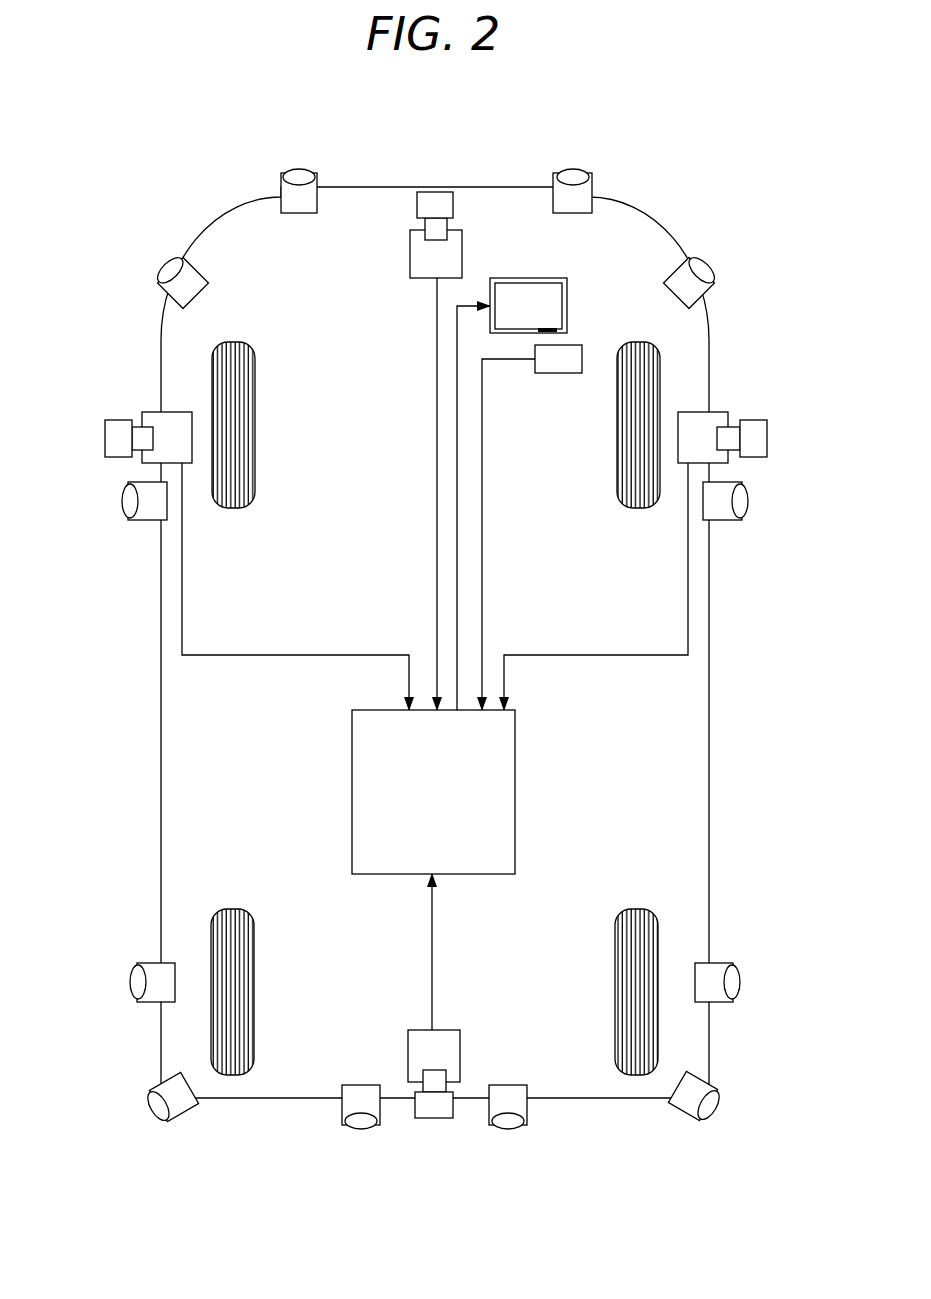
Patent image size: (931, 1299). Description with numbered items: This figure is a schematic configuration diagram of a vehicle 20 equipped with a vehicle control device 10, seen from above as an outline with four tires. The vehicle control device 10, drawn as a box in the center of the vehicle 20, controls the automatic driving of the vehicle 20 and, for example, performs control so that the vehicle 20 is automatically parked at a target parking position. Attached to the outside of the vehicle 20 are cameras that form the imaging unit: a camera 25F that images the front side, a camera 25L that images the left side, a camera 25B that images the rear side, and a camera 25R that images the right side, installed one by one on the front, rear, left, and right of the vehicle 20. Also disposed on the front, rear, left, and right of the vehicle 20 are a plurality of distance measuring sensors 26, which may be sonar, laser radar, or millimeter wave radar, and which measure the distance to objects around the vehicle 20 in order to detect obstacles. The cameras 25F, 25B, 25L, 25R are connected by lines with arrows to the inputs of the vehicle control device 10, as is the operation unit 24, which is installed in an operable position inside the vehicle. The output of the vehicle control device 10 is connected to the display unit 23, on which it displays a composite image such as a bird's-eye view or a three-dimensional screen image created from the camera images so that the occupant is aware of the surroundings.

The vehicle control device 10 is at (515, 757).
The vehicle 20 is at (710, 705).
The display unit 23 is at (556, 278).
The operation unit 24 is at (575, 345).
The camera 25F is at (437, 192).
The camera 25B is at (432, 1119).
The camera 25L is at (120, 420).
The camera 25R is at (757, 420).
The distance measuring sensor 26 is at (303, 169).